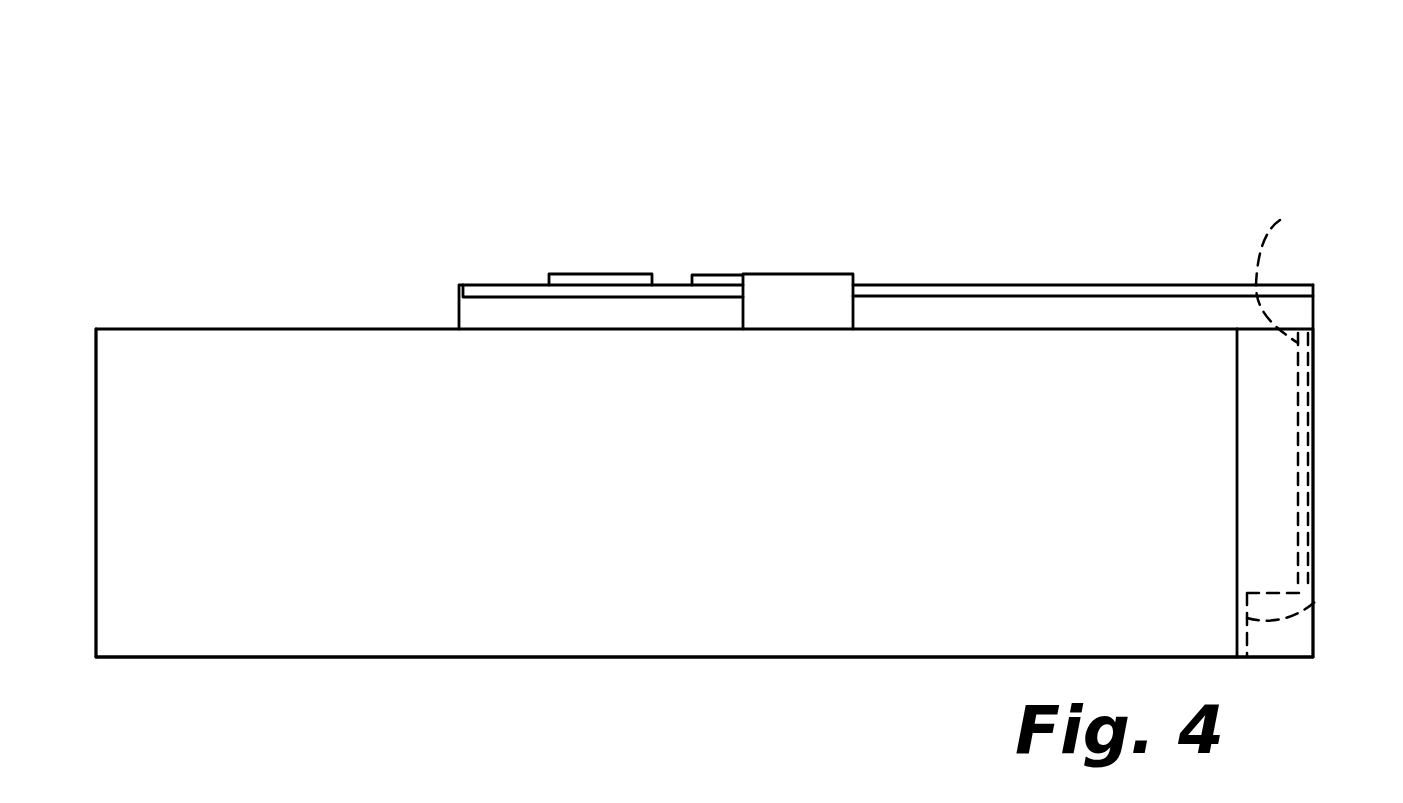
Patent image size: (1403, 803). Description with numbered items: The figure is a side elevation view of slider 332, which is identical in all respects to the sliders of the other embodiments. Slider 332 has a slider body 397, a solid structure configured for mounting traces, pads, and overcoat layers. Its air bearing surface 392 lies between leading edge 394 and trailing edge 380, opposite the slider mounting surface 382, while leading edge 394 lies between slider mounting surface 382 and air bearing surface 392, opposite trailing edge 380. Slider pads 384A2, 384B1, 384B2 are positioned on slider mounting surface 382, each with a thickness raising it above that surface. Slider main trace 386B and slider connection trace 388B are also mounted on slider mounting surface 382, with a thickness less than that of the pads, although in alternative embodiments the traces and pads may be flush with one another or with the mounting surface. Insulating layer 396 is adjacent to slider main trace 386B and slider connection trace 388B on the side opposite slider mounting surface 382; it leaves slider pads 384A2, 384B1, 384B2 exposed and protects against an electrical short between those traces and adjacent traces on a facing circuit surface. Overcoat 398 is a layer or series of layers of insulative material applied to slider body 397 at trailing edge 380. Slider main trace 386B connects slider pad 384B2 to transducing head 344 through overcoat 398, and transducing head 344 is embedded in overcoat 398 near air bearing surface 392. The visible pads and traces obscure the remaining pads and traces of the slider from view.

The slider 332 is at (983, 131).
The slider mounting surface 382 is at (285, 328).
The leading edge 394 is at (93, 392).
The air bearing surface 392 is at (462, 657).
The slider connection trace 388B is at (493, 320).
The insulating layer 396 is at (512, 290).
The slider pad 384B1 is at (563, 277).
The slider pad 384A2 is at (705, 278).
The slider pad 384B2 is at (815, 302).
The trailing edge 380 is at (1313, 520).
The slider main trace 386B is at (1215, 315).
The slider body 397 is at (1202, 407).
The overcoat 398 is at (1267, 440).
The transducing head 344 is at (1317, 600).